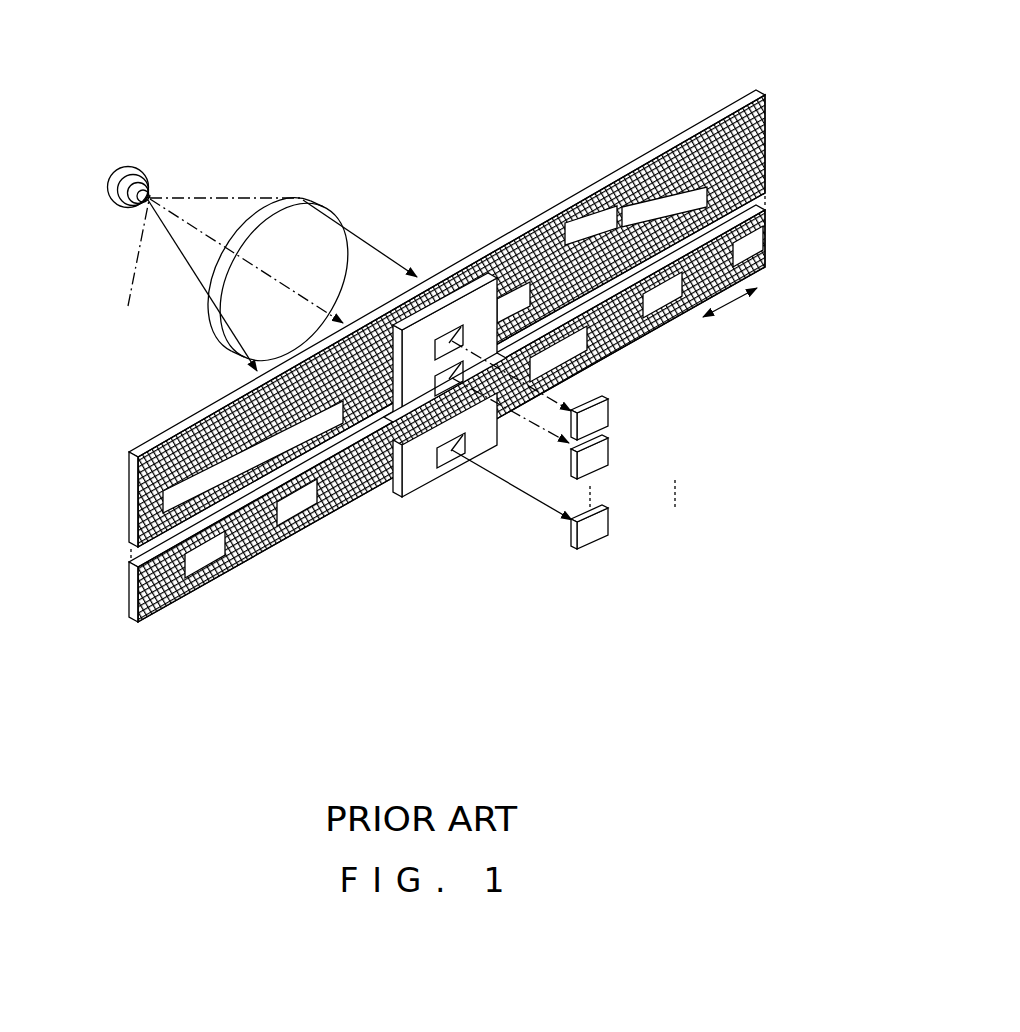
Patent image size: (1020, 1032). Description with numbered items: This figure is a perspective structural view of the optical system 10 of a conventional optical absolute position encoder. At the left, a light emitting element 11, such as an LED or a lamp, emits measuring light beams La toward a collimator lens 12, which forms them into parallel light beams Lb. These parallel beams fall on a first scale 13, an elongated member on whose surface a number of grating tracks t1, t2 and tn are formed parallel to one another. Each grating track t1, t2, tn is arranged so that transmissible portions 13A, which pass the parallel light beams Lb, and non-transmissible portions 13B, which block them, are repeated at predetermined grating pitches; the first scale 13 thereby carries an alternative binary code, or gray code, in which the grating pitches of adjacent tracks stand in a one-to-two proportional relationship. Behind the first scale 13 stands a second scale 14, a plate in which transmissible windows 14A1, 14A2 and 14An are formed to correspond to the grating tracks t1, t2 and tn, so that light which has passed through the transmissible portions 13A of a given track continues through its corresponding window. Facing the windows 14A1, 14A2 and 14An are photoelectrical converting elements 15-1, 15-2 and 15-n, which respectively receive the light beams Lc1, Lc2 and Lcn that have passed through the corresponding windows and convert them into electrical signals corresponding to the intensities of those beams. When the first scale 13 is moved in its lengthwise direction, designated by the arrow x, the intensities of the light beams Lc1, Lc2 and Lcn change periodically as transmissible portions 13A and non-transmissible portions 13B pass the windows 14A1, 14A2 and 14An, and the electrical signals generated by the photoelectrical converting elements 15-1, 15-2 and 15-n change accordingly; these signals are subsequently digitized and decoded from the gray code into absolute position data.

The optical system 10 is at (441, 107).
The light emitting element 11 is at (132, 172).
The collimator lens 12 is at (306, 200).
The first scale 13 is at (468, 343).
The transmissible portions 13A is at (563, 245).
The non-transmissible portions 13B is at (645, 170).
The second scale 14 is at (445, 452).
The transmissible window 14A1 is at (452, 352).
The transmissible window 14A2 is at (452, 384).
The transmissible window 14An is at (452, 452).
The photoelectrical converting element 15-1 is at (613, 413).
The photoelectrical converting element 15-2 is at (613, 453).
The photoelectrical converting element 15-n is at (613, 526).
The measuring light beams La is at (120, 261).
The parallel light beams Lb is at (362, 258).
The light beam Lc1 is at (549, 400).
The light beam Lc2 is at (560, 442).
The light beam Lcn is at (566, 532).
The grating track t1 is at (481, 313).
The grating track t2 is at (825, 212).
The grating track tn is at (482, 413).
The arrow x is at (731, 304).